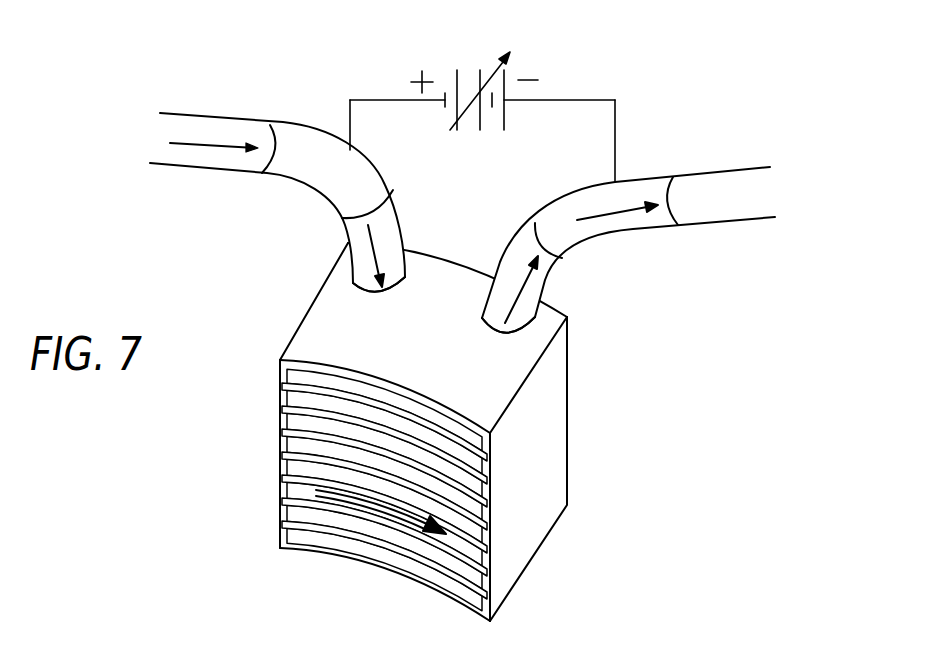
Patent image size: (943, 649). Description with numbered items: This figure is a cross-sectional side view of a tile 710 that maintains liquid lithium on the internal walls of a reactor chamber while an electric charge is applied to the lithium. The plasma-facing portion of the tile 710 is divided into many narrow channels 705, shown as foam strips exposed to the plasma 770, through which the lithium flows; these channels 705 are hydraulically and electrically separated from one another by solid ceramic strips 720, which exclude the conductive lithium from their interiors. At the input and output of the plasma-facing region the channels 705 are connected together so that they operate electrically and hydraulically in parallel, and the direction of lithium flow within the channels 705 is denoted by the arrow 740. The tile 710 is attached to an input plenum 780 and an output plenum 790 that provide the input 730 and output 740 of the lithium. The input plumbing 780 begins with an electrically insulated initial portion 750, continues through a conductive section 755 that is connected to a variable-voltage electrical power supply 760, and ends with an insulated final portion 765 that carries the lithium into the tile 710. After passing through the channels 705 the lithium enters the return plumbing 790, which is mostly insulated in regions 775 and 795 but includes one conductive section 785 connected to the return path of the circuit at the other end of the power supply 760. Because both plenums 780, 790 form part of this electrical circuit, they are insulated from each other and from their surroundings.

The channels 705 is at (313, 400).
The tile 710 is at (323, 325).
The solid ceramic strips 720 is at (453, 557).
The input 730 is at (370, 240).
The output 740 is at (352, 498).
The initial portion of the input plumbing 750 is at (222, 100).
The conductive section of the input plumbing 755 is at (323, 105).
The electrical power supply 760 is at (489, 42).
The final portion of the input plumbing 765 is at (420, 216).
The plasma 770 is at (346, 596).
The insulated region of the return plumbing 775 is at (570, 296).
The input plenum 780 is at (340, 279).
The conductive section of the return plumbing 785 is at (647, 162).
The output plenum 790 is at (566, 330).
The insulated region of the return plumbing 795 is at (713, 236).